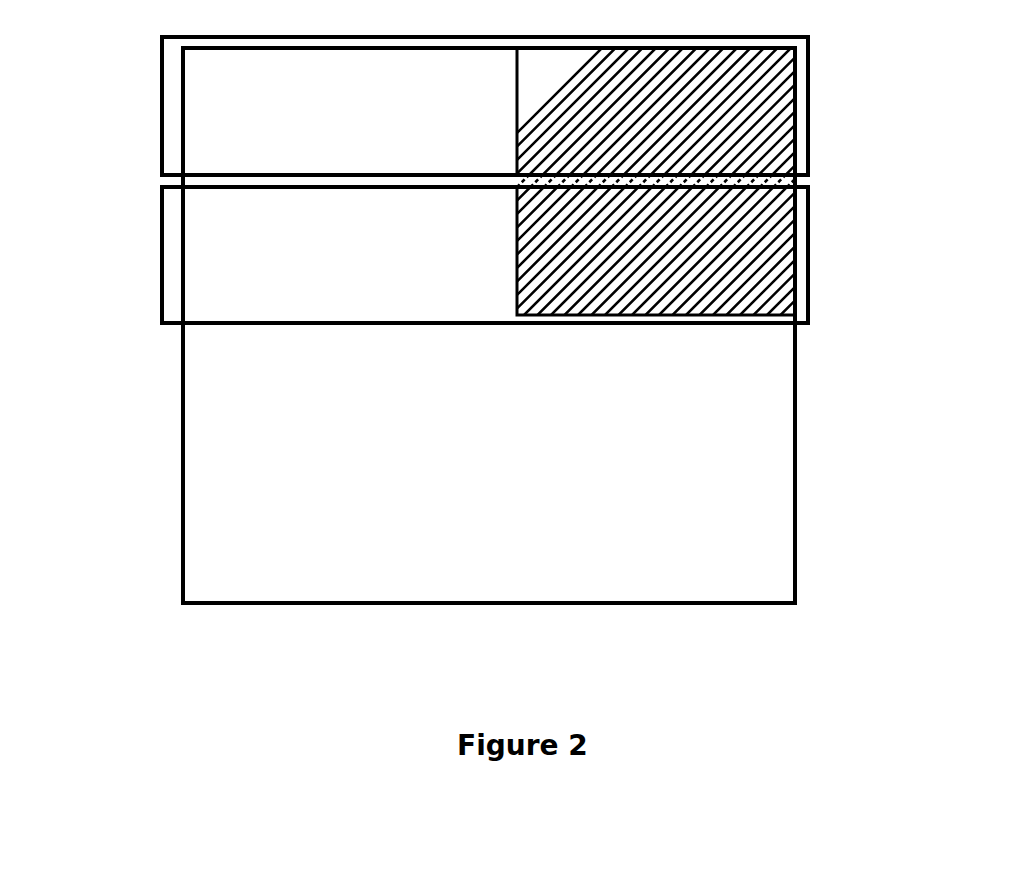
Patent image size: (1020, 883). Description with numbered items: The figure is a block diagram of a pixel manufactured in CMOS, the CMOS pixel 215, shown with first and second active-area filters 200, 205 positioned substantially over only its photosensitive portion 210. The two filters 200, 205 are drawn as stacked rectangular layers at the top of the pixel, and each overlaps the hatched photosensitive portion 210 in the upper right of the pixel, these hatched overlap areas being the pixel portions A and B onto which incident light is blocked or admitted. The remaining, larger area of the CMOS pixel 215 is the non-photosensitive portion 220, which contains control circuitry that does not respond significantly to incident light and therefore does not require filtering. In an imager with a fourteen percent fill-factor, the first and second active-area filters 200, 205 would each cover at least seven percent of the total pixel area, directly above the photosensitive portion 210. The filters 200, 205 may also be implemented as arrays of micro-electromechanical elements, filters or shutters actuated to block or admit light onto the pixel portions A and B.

The first active-area filter 200 is at (422, 101).
The second active-area filter 205 is at (422, 250).
The photosensitive portion 210 is at (635, 200).
The CMOS pixel 215 is at (489, 634).
The non-photosensitive portion 220 is at (424, 325).
The pixel portion A is at (635, 200).
The pixel portion B is at (635, 200).